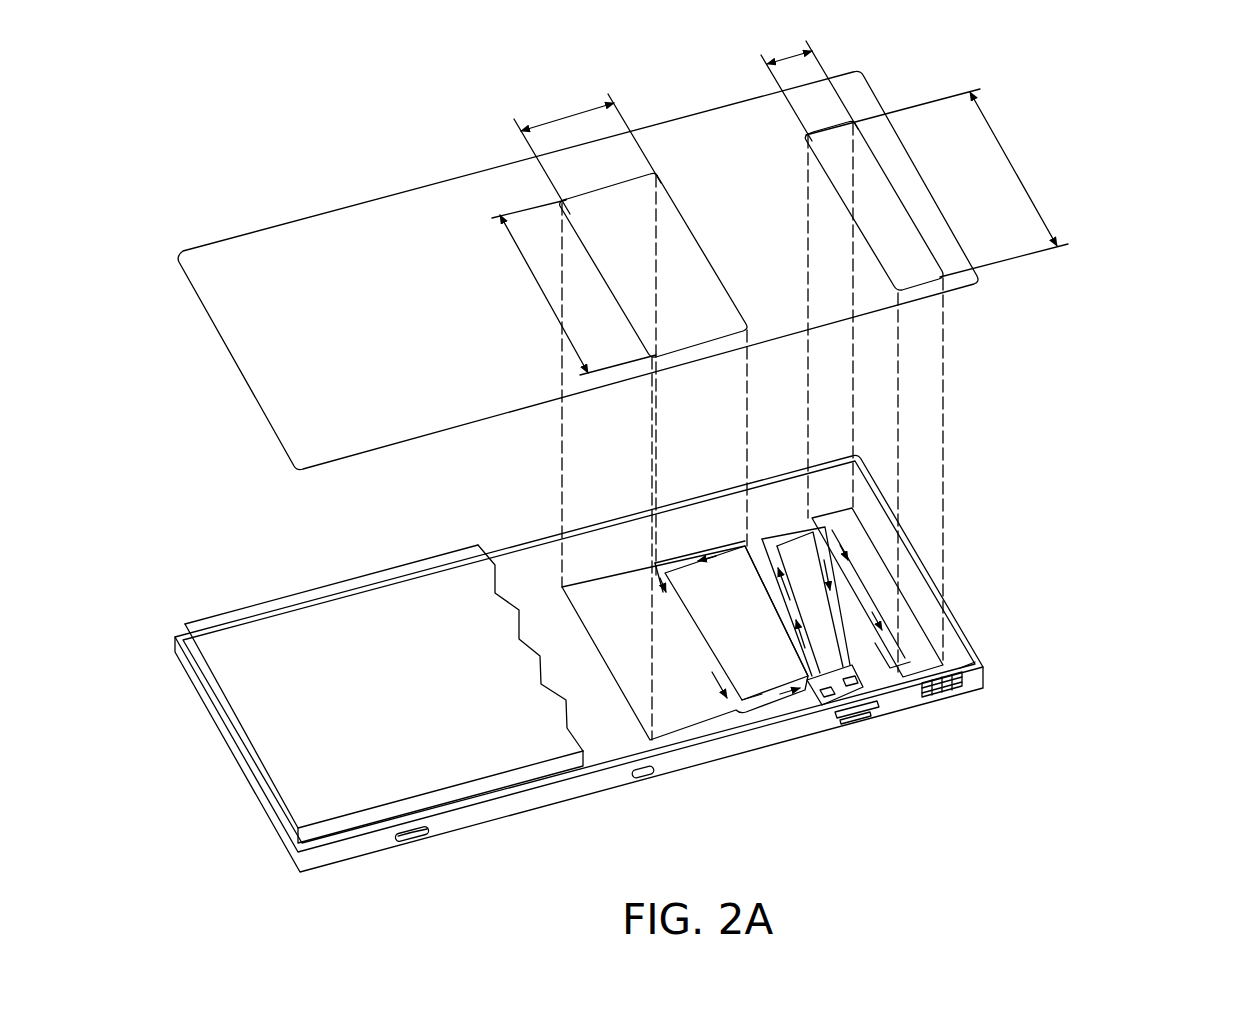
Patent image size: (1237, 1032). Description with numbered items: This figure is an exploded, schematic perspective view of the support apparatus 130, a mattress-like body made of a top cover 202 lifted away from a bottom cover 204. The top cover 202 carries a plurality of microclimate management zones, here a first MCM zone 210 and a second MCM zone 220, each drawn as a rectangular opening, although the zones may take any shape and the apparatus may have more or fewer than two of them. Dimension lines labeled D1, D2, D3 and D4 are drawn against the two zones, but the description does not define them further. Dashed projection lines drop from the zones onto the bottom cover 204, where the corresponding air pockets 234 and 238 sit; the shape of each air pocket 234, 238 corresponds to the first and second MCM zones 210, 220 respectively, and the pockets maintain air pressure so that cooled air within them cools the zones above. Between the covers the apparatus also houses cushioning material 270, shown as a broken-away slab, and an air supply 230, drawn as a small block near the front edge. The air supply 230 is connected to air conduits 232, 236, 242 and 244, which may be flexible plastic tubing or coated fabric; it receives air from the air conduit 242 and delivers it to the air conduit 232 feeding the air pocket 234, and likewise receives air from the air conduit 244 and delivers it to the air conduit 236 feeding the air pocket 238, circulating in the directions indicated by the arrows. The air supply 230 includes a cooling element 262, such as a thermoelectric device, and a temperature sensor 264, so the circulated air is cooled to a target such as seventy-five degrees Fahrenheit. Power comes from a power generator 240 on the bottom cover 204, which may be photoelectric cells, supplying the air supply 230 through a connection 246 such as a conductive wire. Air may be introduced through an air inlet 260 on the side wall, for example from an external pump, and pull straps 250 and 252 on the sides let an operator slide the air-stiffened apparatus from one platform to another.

The support apparatus 130 is at (1166, 67).
The top cover 202 is at (259, 236).
The bottom cover 204 is at (176, 636).
The first MCM zone 210 is at (672, 240).
The second MCM zone 220 is at (887, 207).
The air supply 230 is at (777, 755).
The air conduit 232 is at (760, 600).
The air pocket 234 is at (602, 634).
The air conduit 236 is at (785, 562).
The air pocket 238 is at (872, 560).
The power generator 240 is at (970, 698).
The air conduit 242 is at (760, 698).
The air conduit 244 is at (879, 656).
The connection 246 is at (964, 670).
The pull strap 250 is at (866, 722).
The pull strap 252 is at (422, 840).
The air inlet 260 is at (650, 780).
The cooling element 262 is at (830, 702).
The temperature sensor 264 is at (858, 688).
The cushioning material 270 is at (364, 606).
The first window width D1 is at (580, 120).
The second window width D2 is at (798, 70).
The first window length D3 is at (524, 266).
The second window length D4 is at (1029, 191).